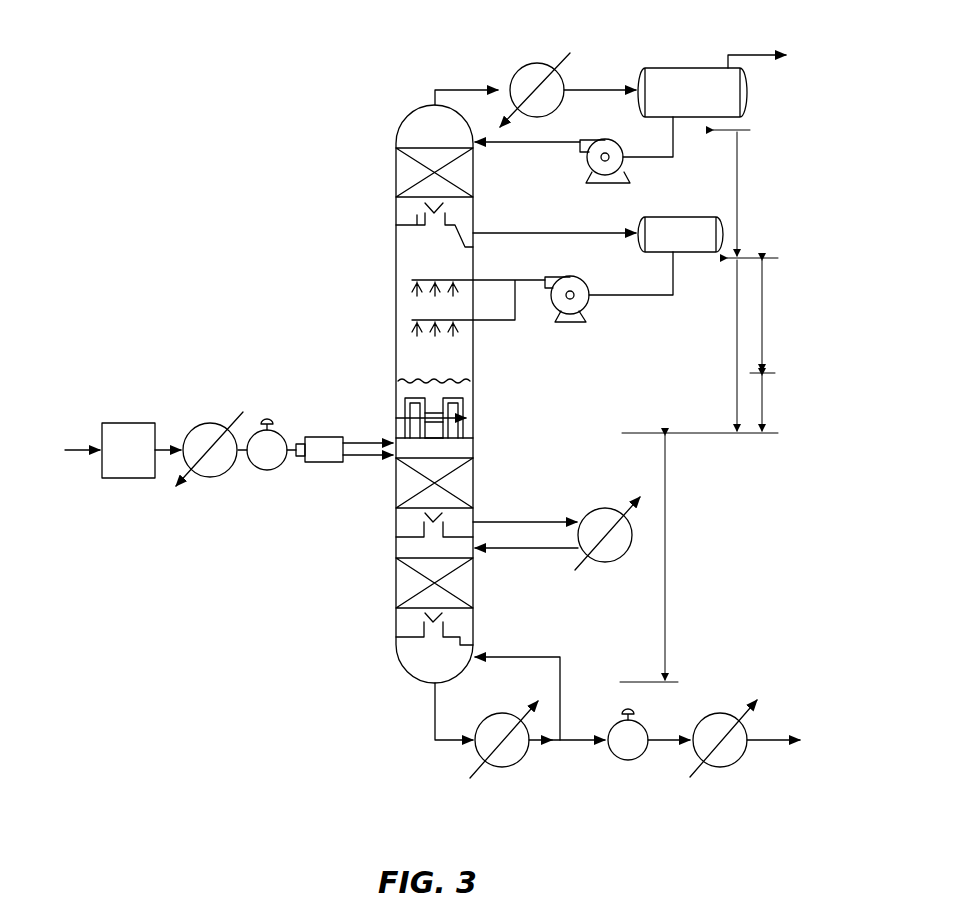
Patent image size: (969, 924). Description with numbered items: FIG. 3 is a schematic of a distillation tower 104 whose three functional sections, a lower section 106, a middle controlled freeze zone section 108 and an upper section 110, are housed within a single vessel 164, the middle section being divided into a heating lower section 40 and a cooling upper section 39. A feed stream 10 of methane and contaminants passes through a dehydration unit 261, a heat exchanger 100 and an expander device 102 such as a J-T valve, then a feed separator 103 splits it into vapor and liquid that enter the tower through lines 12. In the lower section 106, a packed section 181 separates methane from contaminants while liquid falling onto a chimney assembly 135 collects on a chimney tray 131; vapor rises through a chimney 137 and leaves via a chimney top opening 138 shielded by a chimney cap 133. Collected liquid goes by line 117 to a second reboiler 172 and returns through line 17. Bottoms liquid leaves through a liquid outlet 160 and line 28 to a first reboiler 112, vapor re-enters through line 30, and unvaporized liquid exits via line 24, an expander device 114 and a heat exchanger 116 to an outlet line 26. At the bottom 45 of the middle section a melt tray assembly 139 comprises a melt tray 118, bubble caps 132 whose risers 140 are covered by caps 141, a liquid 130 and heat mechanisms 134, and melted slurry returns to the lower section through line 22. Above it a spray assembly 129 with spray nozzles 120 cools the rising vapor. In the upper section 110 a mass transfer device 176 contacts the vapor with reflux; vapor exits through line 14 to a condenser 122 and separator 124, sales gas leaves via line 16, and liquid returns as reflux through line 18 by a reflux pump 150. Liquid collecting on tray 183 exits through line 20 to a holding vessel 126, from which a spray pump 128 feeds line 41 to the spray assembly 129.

The distillation tower 104 is at (308, 112).
The line 14 is at (468, 86).
The condenser 122 is at (540, 62).
The separator 124 is at (664, 68).
The line 16 is at (736, 55).
The reflux pump 150 is at (612, 140).
The line 18 is at (542, 143).
The mass transfer device 176 is at (418, 145).
The tray 183 is at (415, 227).
The line 20 is at (529, 233).
The holding vessel 126 is at (662, 217).
The spray pump 128 is at (583, 278).
The line 41 is at (623, 295).
The spray nozzle 120 is at (410, 322).
The spray assembly 129 is at (522, 323).
The upper section 110 is at (739, 190).
The middle controlled freeze zone section 108 is at (735, 343).
The upper section of the middle controlled freeze zone section 39 is at (764, 320).
The lower section of the middle controlled freeze zone section 40 is at (764, 405).
The lower section 106 is at (667, 553).
The cap 141 is at (408, 385).
The melt tray assembly 139 is at (468, 384).
The heat mechanism 134 is at (404, 417).
The bubble cap 132 is at (465, 400).
The liquid 130 is at (472, 415).
The riser 140 is at (464, 436).
The melt tray 118 is at (463, 440).
The bottom of the middle controlled freeze zone section 45 is at (436, 440).
The line 22 is at (392, 441).
The line 12 is at (325, 436).
The feed separator 103 is at (299, 458).
The expander device 102 is at (266, 470).
The heat exchanger 100 is at (222, 423).
The dehydration unit 261 is at (140, 423).
The feed stream 10 is at (76, 450).
The packed section 181 is at (412, 458).
The chimney top opening 138 is at (404, 516).
The chimney 137 is at (400, 526).
The chimney cap 133 is at (443, 517).
The chimney tray 131 is at (405, 537).
The chimney assembly 135 is at (356, 543).
The line 117 is at (546, 522).
The second reboiler 172 is at (603, 508).
The line 17 is at (562, 548).
The single vessel 164 is at (470, 632).
The line 30 is at (520, 657).
The liquid outlet 160 is at (430, 685).
The line 28 is at (447, 743).
The first reboiler 112 is at (515, 713).
The line 24 is at (574, 735).
The expander device 114 is at (640, 760).
The heat exchanger 116 is at (730, 713).
The bottoms product stream 26 is at (764, 738).